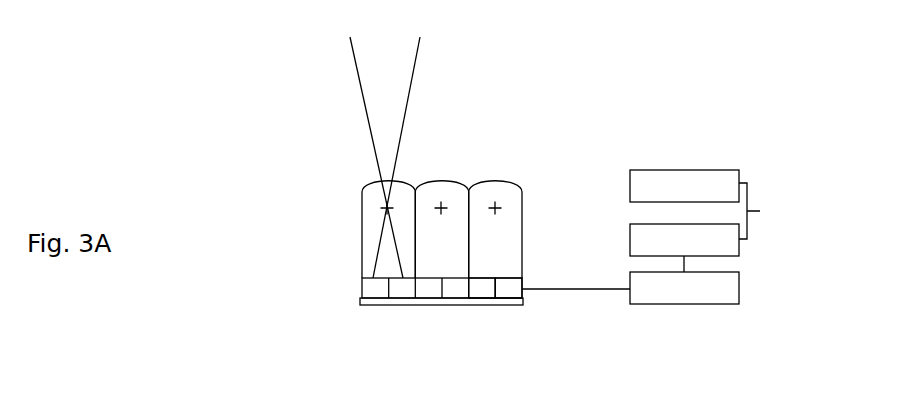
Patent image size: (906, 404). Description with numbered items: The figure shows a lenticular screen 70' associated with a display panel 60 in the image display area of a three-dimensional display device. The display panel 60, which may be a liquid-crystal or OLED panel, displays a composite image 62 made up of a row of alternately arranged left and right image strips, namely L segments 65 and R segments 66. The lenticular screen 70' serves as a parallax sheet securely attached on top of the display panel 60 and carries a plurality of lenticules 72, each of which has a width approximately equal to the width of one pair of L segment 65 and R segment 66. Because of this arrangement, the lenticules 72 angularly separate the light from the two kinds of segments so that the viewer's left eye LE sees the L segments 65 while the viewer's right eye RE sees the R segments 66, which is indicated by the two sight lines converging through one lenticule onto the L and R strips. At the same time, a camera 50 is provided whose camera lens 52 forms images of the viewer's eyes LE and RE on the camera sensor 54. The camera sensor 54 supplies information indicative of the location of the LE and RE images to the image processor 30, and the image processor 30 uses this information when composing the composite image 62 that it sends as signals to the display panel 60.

The right eye RE is at (370, 146).
The left eye LE is at (399, 146).
The lenticular screen 70' is at (365, 229).
The lenticules 72 is at (443, 192).
The composite image 62 is at (366, 290).
The L segment 65 is at (483, 278).
The R segment 66 is at (505, 278).
The display panel 60 is at (372, 303).
The camera 50 is at (686, 212).
The camera lens 52 is at (635, 184).
The camera sensor 54 is at (637, 237).
The image processor 30 is at (733, 285).